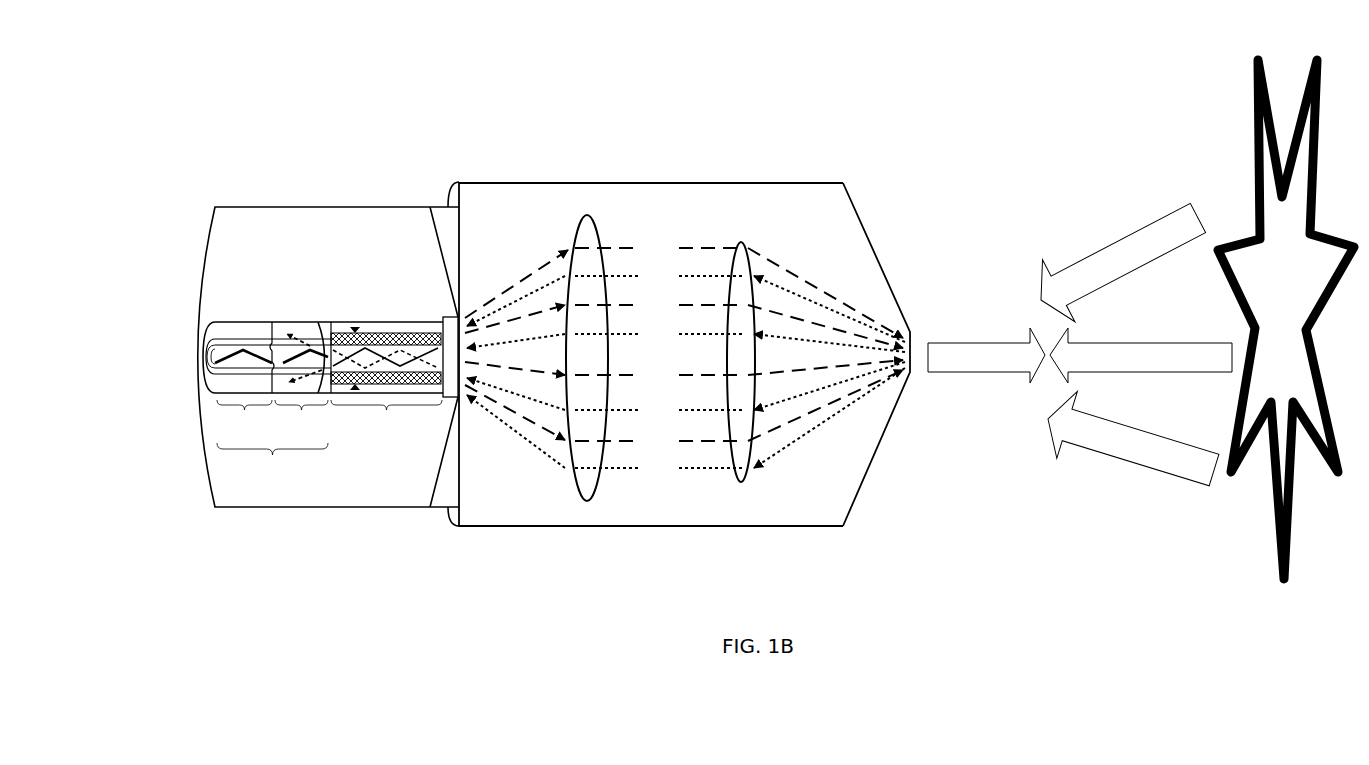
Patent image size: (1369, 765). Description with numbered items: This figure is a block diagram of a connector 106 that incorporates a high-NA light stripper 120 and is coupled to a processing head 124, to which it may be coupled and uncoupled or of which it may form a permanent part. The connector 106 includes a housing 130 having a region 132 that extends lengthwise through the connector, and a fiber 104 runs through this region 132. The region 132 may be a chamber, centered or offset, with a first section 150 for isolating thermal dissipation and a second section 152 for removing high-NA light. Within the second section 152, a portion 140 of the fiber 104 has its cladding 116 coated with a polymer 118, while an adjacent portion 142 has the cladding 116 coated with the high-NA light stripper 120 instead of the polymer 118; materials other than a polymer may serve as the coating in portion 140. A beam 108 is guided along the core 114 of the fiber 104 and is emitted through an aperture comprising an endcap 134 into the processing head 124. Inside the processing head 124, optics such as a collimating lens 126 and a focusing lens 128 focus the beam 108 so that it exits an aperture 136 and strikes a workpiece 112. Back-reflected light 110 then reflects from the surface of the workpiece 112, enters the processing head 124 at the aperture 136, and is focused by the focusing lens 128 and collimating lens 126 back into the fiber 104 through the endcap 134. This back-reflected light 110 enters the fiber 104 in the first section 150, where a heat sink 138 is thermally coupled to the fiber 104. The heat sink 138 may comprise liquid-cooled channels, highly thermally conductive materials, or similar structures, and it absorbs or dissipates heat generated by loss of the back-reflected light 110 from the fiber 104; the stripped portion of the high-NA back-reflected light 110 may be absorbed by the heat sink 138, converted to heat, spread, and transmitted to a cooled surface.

The fiber 104 is at (207, 372).
The connector 106 is at (347, 357).
The beam 108 is at (258, 357).
The back-reflected light 110 is at (849, 345).
The workpiece 112 is at (1286, 319).
The core 114 is at (272, 353).
The cladding 116 is at (207, 345).
The polymer 118 is at (212, 377).
The high-NA light stripper 120 is at (320, 320).
The processing head 124 is at (651, 354).
The collimating lens 126 is at (580, 500).
The focusing lens 128 is at (743, 241).
The housing 130 is at (340, 206).
The region 132 is at (207, 325).
The endcap 134 is at (450, 323).
The aperture 136 is at (912, 346).
The heat sink 138 is at (383, 333).
The portion 140 is at (244, 417).
The portion 142 is at (301, 384).
The first section 150 is at (386, 393).
The second section 152 is at (272, 464).